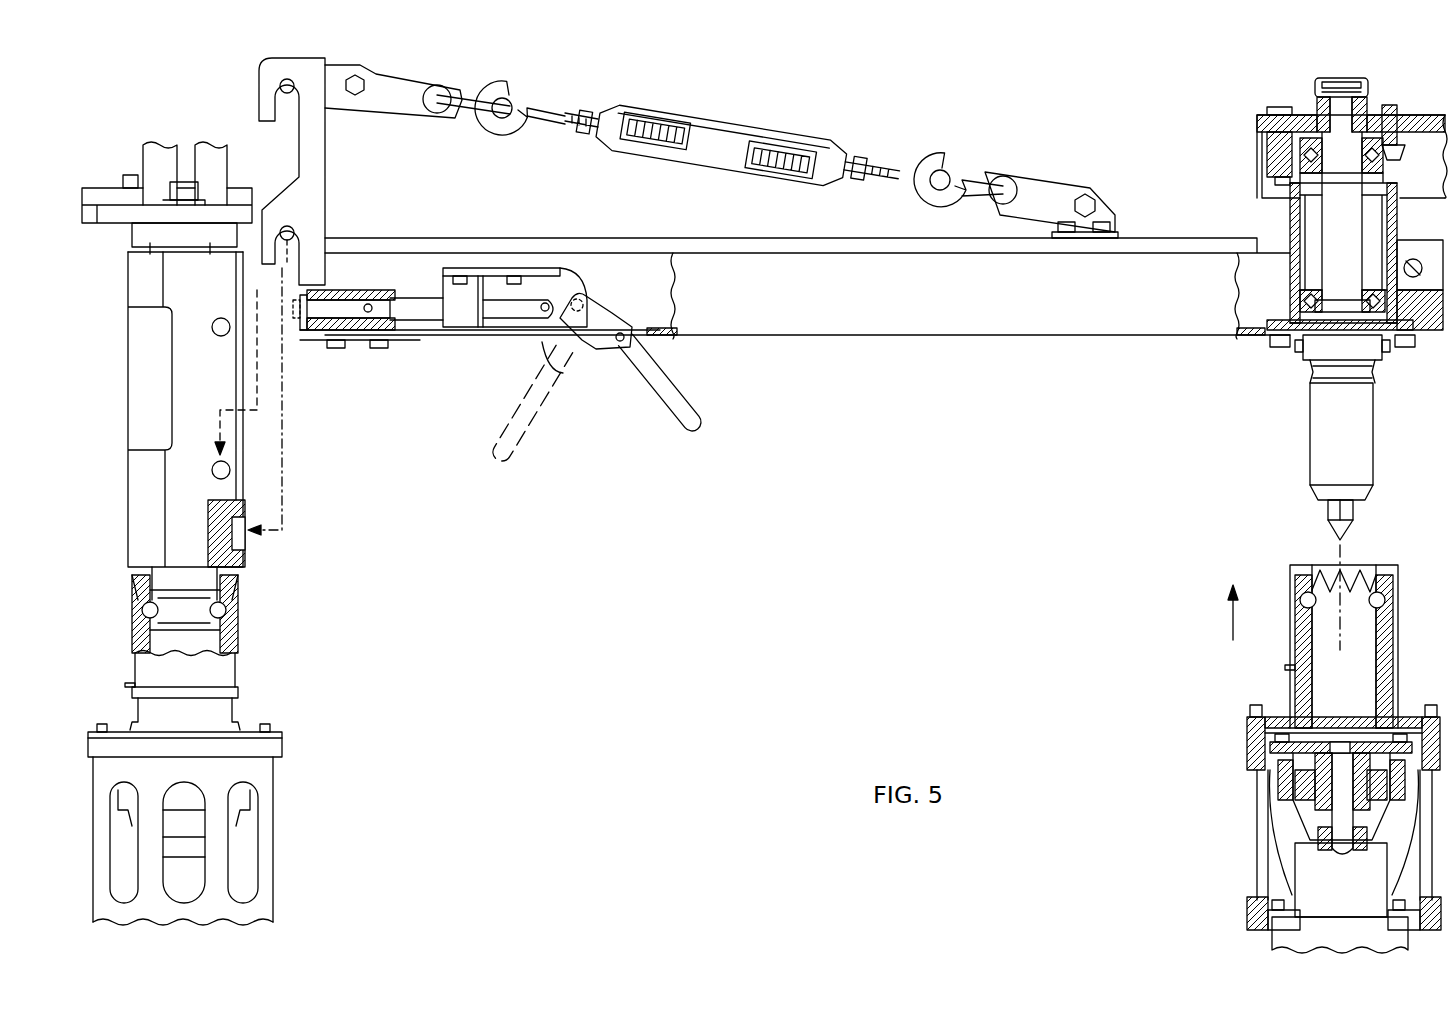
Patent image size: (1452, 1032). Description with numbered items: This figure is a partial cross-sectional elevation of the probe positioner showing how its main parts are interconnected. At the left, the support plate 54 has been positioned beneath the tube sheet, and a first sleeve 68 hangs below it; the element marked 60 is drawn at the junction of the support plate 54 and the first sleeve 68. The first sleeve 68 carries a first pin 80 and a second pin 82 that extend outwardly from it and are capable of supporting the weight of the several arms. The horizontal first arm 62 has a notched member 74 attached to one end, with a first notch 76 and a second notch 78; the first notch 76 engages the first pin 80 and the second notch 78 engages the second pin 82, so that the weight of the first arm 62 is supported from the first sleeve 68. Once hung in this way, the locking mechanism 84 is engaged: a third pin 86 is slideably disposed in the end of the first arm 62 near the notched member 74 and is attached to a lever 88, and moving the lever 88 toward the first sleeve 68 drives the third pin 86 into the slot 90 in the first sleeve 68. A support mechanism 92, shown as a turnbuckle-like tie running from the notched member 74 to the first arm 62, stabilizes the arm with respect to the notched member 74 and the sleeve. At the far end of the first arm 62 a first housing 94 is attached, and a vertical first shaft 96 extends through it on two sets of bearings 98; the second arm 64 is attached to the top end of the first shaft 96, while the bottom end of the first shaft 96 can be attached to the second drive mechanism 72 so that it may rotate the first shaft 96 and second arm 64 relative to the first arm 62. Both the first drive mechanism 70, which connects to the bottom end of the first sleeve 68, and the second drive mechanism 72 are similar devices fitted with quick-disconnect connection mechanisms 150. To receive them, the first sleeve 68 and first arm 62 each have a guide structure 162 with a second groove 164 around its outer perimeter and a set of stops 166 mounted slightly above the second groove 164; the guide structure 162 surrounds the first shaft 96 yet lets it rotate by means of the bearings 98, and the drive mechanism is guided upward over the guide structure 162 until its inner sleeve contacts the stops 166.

The support plate 54 is at (117, 222).
The adapter block 60 is at (128, 252).
The first arm 62 is at (1060, 333).
The second arm 64 is at (1408, 118).
The first sleeve 68 is at (134, 492).
The first drive mechanism 70 is at (270, 830).
The second drive mechanism 72 is at (1250, 842).
The notched member 74 is at (313, 148).
The first notch 76 is at (298, 238).
The second notch 78 is at (278, 88).
The first pin 80 is at (215, 468).
The second pin 82 is at (221, 318).
The locking mechanism 84 is at (474, 346).
The third pin 86 is at (343, 335).
The lever 88 is at (658, 402).
The slot 90 is at (240, 532).
The support mechanism 92 is at (822, 150).
The first housing 94 is at (1293, 214).
The first shaft 96 is at (1353, 230).
The bearings 98 is at (1298, 162).
The connection mechanism 150 is at (242, 606).
The guide structure 162 is at (205, 645).
The second groove 164 is at (1380, 376).
The stops 166 is at (1383, 350).